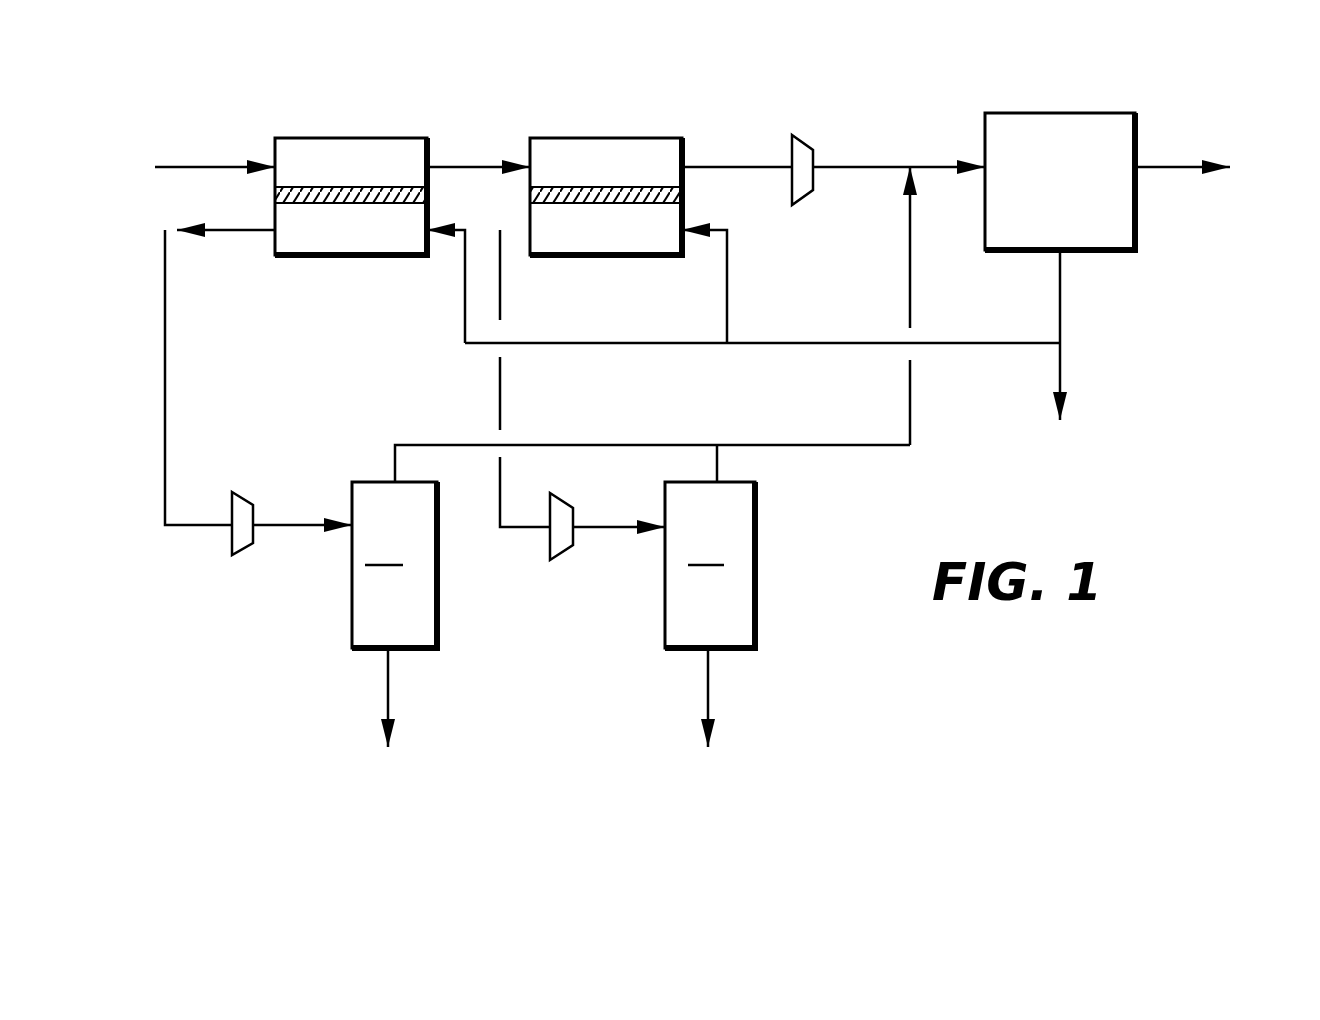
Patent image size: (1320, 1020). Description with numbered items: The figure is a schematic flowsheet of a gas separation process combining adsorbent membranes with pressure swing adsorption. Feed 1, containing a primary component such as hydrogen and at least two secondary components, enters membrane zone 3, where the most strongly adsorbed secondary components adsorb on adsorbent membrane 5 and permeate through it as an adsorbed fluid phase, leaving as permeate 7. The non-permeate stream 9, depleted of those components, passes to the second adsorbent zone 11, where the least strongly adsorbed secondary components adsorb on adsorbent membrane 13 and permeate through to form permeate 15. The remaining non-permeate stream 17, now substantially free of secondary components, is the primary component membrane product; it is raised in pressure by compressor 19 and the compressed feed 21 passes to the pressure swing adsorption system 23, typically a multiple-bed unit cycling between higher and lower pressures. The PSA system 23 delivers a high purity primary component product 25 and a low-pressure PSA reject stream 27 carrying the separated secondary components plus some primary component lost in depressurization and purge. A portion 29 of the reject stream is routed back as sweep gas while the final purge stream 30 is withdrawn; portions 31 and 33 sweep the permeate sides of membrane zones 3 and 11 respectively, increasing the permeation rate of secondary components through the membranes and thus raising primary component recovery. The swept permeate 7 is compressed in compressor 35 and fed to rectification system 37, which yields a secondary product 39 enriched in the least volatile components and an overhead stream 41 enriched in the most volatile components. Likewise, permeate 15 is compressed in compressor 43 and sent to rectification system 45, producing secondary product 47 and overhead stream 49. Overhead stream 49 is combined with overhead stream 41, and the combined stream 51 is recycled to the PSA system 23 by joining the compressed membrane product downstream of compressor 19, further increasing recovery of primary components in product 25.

The feed 1 is at (213, 166).
The membrane zone 3 is at (371, 138).
The adsorbent membrane 5 is at (325, 187).
The permeate 7 is at (246, 232).
The non-permeate stream 9 is at (469, 164).
The second adsorbent zone 11 is at (622, 138).
The adsorbent membrane 13 is at (612, 187).
The permeate 15 is at (502, 304).
The non-permeate stream 17 is at (739, 164).
The compressor 19 is at (804, 140).
The compressed feed 21 is at (938, 164).
The pressure swing adsorption (PSA) system 23 is at (1084, 113).
The primary component product 25 is at (1178, 165).
The PSA reject stream 27 is at (1062, 306).
The portion of PSA reject stream 29 is at (1000, 341).
The final purge stream 30 is at (1062, 378).
The portion of reject stream 31 is at (464, 298).
The portion of reject stream 33 is at (729, 300).
The compressor 35 is at (240, 548).
The rectification system 37 is at (396, 566).
The secondary product 39 is at (390, 694).
The overhead stream 41 is at (432, 444).
The compressor 43 is at (560, 555).
The rectification system 45 is at (711, 566).
The secondary product 47 is at (710, 698).
The overhead stream 49 is at (719, 462).
The combined stream 51 is at (908, 388).